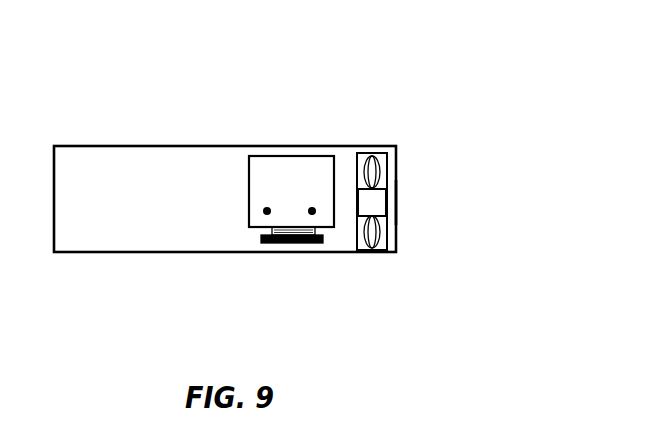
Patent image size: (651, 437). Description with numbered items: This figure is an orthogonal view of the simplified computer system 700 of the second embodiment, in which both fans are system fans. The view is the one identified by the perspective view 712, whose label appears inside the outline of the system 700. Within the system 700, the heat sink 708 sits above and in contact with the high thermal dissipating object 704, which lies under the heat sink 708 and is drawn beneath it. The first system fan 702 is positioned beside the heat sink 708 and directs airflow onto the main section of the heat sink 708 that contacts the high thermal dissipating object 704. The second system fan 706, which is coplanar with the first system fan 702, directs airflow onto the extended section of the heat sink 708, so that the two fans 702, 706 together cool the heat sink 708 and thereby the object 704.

The computer system 700 is at (136, 146).
The first system fan 702 is at (372, 154).
The high thermal dissipating object 704 is at (293, 243).
The second system fan 706 is at (398, 202).
The heat sink 708 is at (300, 176).
The perspective view 712 is at (186, 211).